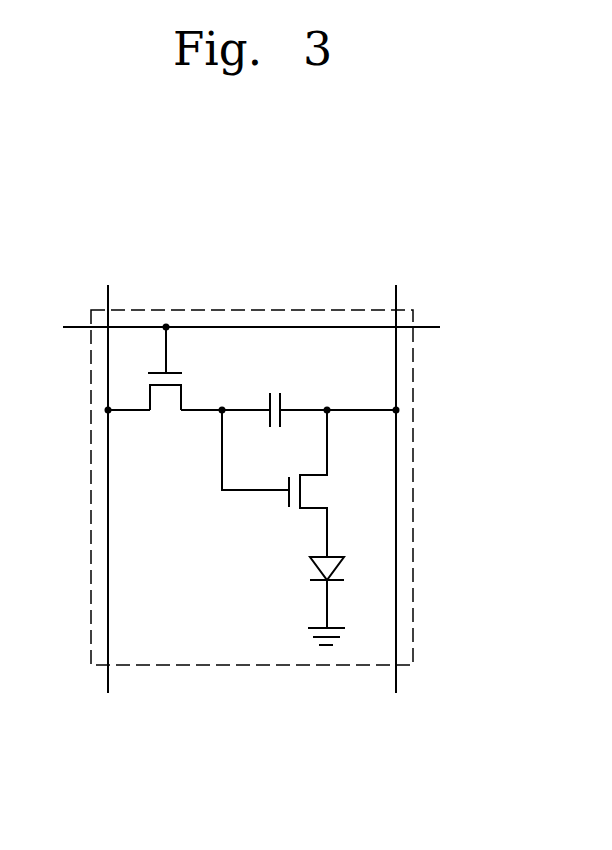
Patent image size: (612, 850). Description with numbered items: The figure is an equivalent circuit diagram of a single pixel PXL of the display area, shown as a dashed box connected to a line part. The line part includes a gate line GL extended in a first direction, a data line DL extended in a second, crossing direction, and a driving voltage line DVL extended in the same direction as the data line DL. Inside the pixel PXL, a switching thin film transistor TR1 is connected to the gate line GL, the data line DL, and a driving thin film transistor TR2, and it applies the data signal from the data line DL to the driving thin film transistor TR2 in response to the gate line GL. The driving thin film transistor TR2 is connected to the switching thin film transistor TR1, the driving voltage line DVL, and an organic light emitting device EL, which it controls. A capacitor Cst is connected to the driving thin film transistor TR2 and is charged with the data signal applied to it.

The data line DL is at (107, 474).
The driving voltage line DVL is at (395, 475).
The gate line GL is at (237, 327).
The switching thin film transistor TR1 is at (164, 382).
The driving thin film transistor TR2 is at (292, 483).
The capacitor Cst is at (276, 385).
The organic light emitting device EL is at (342, 601).
The pixel PXL is at (413, 500).